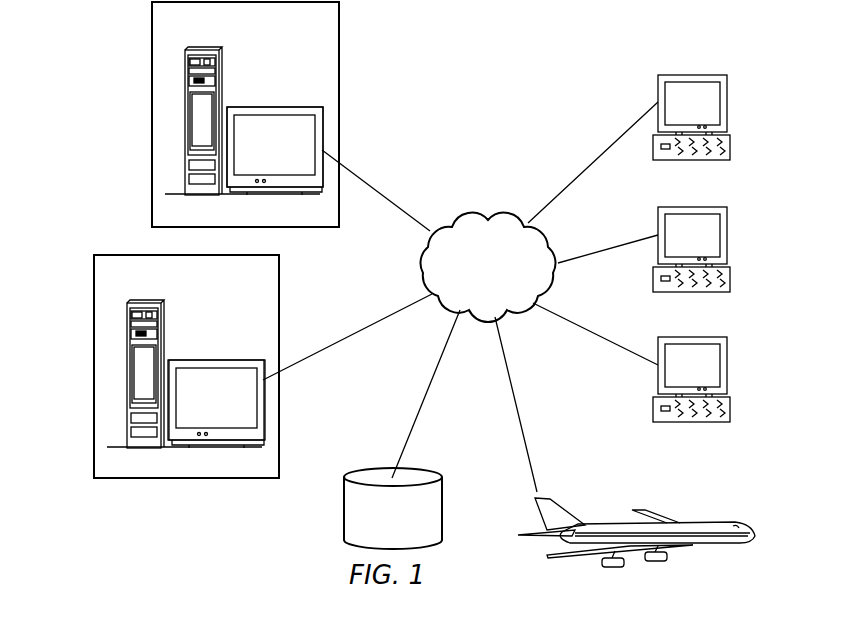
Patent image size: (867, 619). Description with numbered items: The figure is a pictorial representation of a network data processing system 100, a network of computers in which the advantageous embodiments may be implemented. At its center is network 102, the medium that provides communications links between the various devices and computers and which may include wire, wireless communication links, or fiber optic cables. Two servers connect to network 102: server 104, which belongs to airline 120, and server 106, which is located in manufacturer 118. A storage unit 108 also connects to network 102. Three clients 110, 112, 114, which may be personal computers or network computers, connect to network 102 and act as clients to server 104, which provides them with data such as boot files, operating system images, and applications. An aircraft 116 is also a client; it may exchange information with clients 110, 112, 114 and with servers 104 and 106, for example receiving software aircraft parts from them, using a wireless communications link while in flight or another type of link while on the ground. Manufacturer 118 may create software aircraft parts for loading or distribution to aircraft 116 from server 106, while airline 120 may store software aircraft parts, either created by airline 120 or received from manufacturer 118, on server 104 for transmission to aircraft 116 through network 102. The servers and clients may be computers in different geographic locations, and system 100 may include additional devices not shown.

The network data processing system 100 is at (531, 121).
The network 102 is at (458, 216).
The server 104 is at (215, 360).
The server 106 is at (264, 107).
The storage unit 108 is at (344, 516).
The client 110 is at (727, 103).
The client 112 is at (727, 235).
The client 114 is at (727, 367).
The aircraft 116 is at (703, 547).
The manufacturer 118 is at (210, 114).
The airline 120 is at (151, 366).